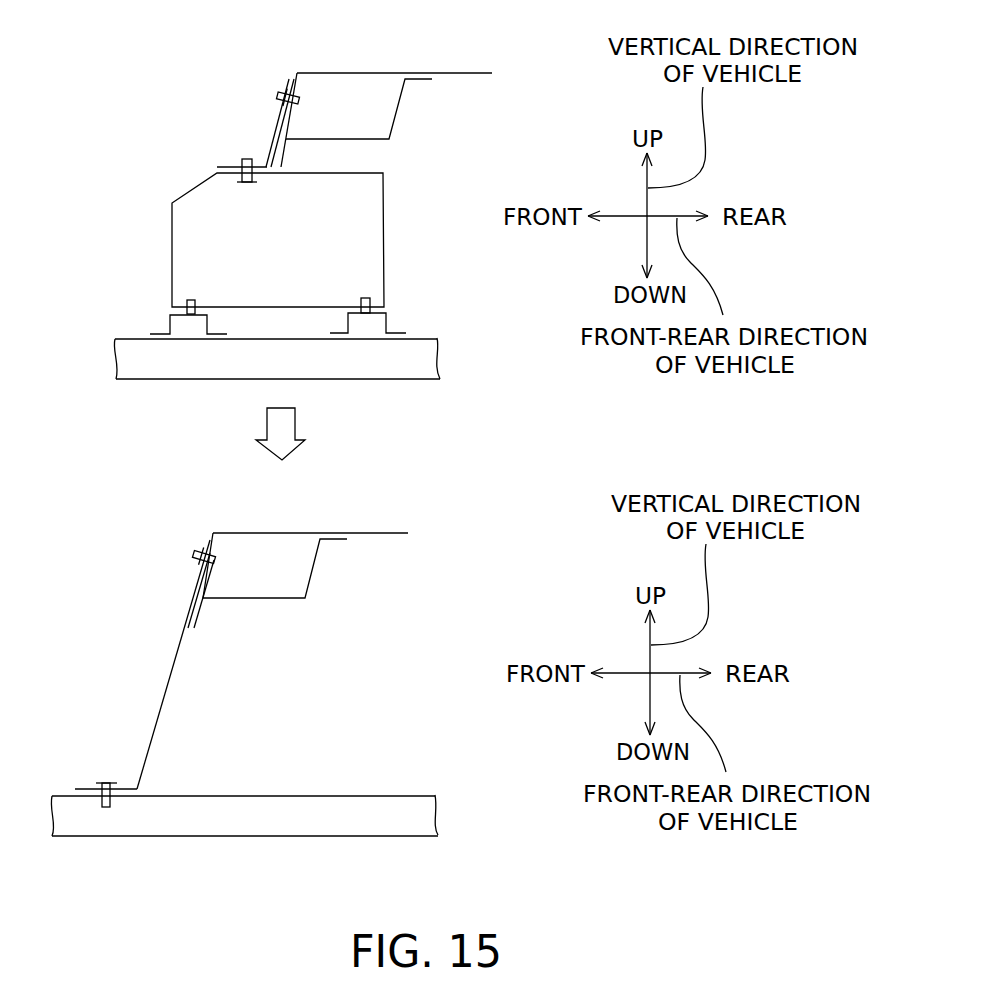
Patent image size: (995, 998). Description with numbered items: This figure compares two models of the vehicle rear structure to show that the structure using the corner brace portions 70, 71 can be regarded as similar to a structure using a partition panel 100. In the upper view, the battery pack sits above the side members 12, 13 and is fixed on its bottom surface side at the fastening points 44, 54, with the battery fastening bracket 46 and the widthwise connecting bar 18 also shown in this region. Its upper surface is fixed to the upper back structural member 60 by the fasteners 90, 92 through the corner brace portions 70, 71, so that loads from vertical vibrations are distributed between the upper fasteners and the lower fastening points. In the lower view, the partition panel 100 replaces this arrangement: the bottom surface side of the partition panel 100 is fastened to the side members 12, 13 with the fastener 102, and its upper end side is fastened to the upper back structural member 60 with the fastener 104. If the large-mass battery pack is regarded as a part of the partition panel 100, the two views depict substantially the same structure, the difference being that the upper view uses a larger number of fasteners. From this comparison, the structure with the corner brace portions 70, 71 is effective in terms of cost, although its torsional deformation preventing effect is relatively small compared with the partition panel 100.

The side member 12 is at (290, 587).
The side member 13 is at (437, 357).
The widthwise connecting bar 18 is at (170, 322).
The fastening point 44 is at (173, 312).
The battery fastening bracket 46 is at (387, 320).
The fastening point 54 is at (388, 313).
The upper back structural member 60 is at (372, 92).
The corner brace portion 70 is at (228, 123).
The corner brace portion 71 is at (273, 127).
The fastener 90 is at (217, 173).
The fastener 92 is at (291, 87).
The partition panel 100 is at (167, 677).
The fastener 102 is at (75, 790).
The fastener 104 is at (208, 538).